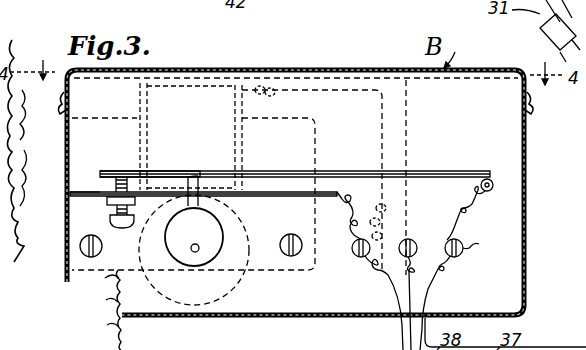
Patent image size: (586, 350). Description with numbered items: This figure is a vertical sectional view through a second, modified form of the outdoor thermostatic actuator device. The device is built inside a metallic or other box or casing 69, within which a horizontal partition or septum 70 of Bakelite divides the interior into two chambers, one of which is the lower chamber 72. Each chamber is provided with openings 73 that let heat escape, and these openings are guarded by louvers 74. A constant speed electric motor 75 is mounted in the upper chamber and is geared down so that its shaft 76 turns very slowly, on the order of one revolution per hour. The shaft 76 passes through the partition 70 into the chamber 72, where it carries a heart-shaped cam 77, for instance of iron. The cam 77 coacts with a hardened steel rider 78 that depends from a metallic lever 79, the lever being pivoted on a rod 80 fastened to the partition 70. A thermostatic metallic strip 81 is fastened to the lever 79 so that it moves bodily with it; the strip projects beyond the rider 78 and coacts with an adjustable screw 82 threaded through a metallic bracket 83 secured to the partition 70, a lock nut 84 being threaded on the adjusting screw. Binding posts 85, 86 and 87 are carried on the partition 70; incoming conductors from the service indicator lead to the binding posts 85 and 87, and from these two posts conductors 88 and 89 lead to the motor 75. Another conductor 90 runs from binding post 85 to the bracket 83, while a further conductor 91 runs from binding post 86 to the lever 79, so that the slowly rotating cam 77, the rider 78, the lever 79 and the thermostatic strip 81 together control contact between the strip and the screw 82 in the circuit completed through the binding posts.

The box or casing 69 is at (529, 205).
The horizontal partition 70 is at (312, 100).
The chamber 72 is at (502, 299).
The openings 73 is at (72, 110).
The louvers 74 is at (58, 101).
The constant speed electric motor 75 is at (216, 154).
The shaft 76 is at (197, 255).
The heart-shaped cam 77 is at (204, 214).
The rider 78 is at (215, 196).
The lever 79 is at (412, 178).
The rod 80 is at (493, 187).
The thermostatic metallic strip 81 is at (130, 172).
The adjustable screw 82 is at (110, 212).
The bracket 83 is at (80, 192).
The lock nut 84 is at (130, 235).
The binding post 85 is at (356, 256).
The binding post 86 is at (462, 253).
The binding post 87 is at (411, 240).
The conductor 88 is at (382, 137).
The conductor 89 is at (405, 135).
The conductor 90 is at (353, 238).
The conductor 91 is at (478, 246).